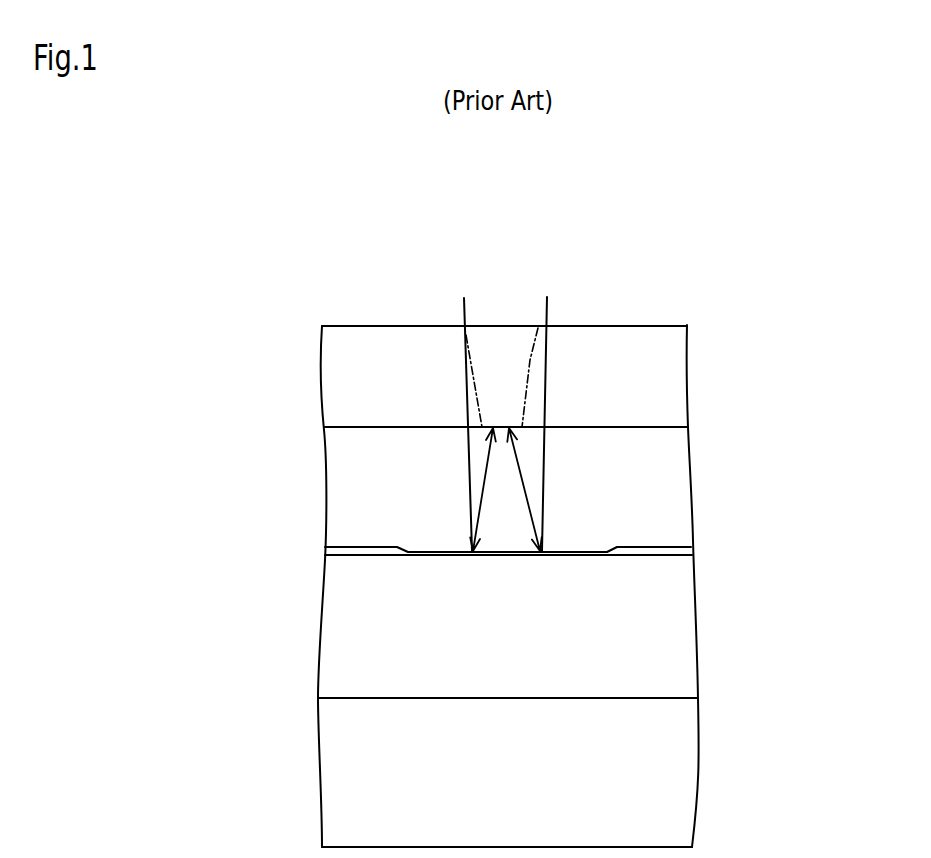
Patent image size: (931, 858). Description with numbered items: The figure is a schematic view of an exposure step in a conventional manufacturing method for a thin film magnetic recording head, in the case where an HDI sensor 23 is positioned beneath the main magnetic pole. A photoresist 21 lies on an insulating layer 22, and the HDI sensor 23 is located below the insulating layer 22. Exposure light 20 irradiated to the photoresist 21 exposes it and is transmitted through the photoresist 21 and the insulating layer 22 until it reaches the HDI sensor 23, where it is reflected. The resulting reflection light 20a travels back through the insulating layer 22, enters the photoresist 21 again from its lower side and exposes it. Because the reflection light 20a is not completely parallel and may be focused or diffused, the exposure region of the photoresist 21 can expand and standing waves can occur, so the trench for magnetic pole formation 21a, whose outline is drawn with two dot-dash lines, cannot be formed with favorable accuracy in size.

The exposure light 20 is at (464, 312).
The reflection light 20a is at (527, 505).
The photoresist 21 is at (672, 372).
The trench for magnetic pole formation 21a is at (530, 360).
The insulating layer 22 is at (675, 493).
The HDI sensor 23 is at (562, 552).